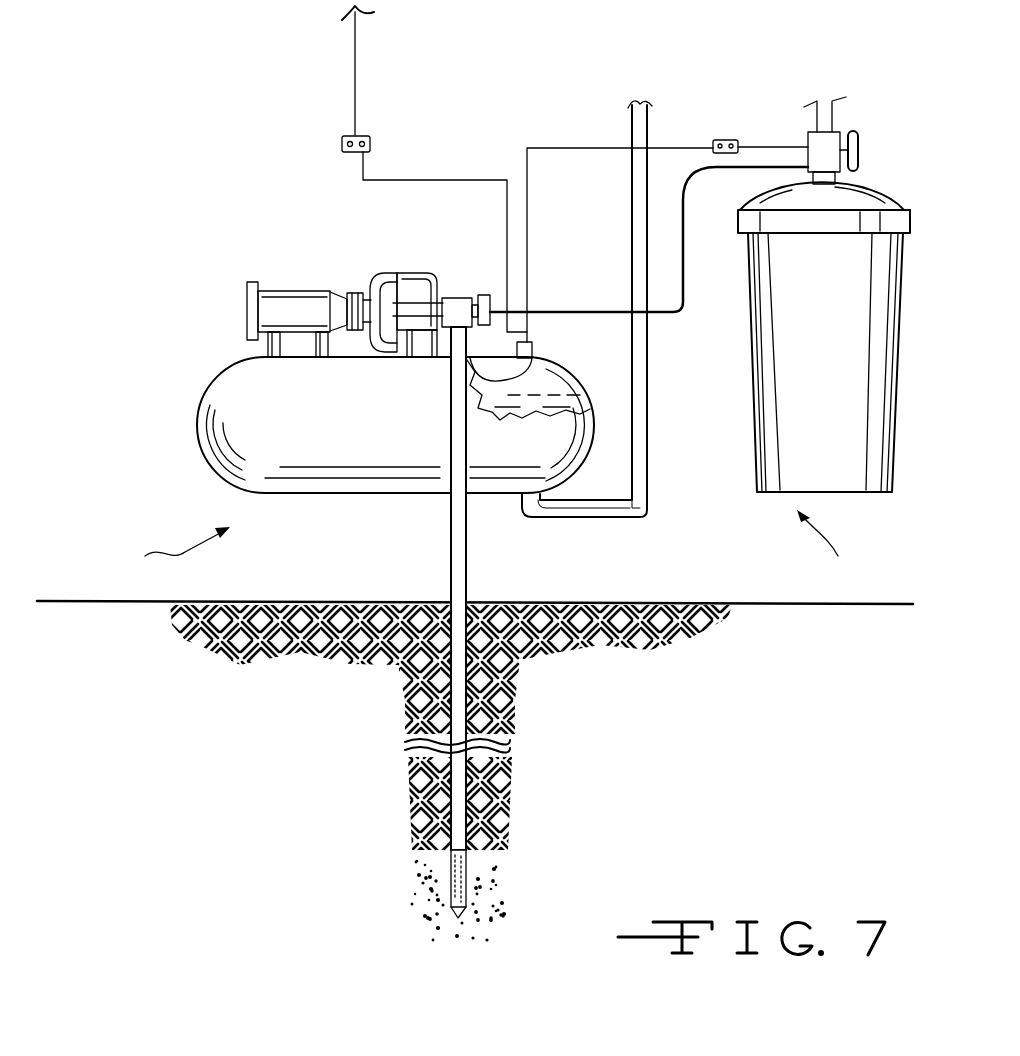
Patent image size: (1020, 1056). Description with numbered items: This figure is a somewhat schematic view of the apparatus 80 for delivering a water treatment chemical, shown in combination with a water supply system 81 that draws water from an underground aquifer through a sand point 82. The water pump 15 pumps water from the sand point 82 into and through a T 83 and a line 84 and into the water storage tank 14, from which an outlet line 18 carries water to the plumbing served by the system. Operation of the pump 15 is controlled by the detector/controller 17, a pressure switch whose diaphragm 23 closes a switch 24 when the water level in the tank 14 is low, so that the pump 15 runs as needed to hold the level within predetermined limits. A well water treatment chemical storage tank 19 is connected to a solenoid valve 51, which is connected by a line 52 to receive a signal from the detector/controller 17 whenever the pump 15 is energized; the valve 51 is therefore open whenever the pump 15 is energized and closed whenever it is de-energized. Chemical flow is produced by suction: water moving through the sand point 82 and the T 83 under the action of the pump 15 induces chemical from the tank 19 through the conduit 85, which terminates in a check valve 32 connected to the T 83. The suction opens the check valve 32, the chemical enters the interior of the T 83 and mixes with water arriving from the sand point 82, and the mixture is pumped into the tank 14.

The water storage tank 14 is at (361, 406).
The water pump 15 is at (356, 292).
The detector/controller 17 is at (536, 365).
The outlet line 18 is at (630, 192).
The well water treatment chemical storage tank 19 is at (840, 384).
The diaphragm 23 is at (465, 300).
The switch 24 is at (530, 342).
The check valve 32 is at (495, 302).
The solenoid valve 51 is at (840, 130).
The line 52 is at (678, 147).
The apparatus 80 is at (848, 547).
The water supply system 81 is at (157, 555).
The sand point 82 is at (470, 913).
The T 83 is at (437, 360).
The line 84 is at (407, 358).
The conduit 85 is at (673, 313).